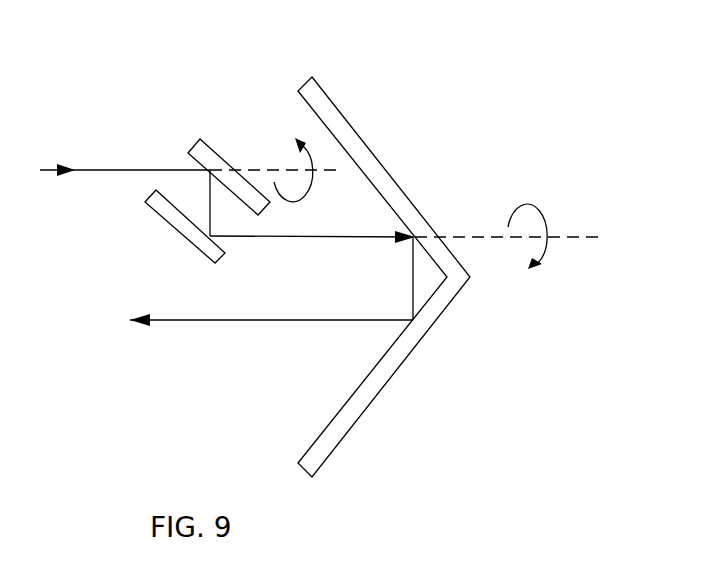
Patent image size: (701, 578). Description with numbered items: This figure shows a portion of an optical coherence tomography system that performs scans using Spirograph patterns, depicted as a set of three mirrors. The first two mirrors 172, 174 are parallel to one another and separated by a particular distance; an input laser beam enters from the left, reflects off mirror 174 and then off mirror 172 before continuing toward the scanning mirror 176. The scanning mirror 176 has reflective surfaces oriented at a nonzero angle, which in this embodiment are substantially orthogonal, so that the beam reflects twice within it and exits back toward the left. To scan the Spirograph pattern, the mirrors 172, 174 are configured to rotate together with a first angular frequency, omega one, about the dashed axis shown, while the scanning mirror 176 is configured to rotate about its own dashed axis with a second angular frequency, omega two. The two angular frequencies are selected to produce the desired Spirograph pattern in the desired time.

The mirror 172 is at (187, 240).
The mirror 174 is at (188, 153).
The scanning mirror 176 is at (398, 185).